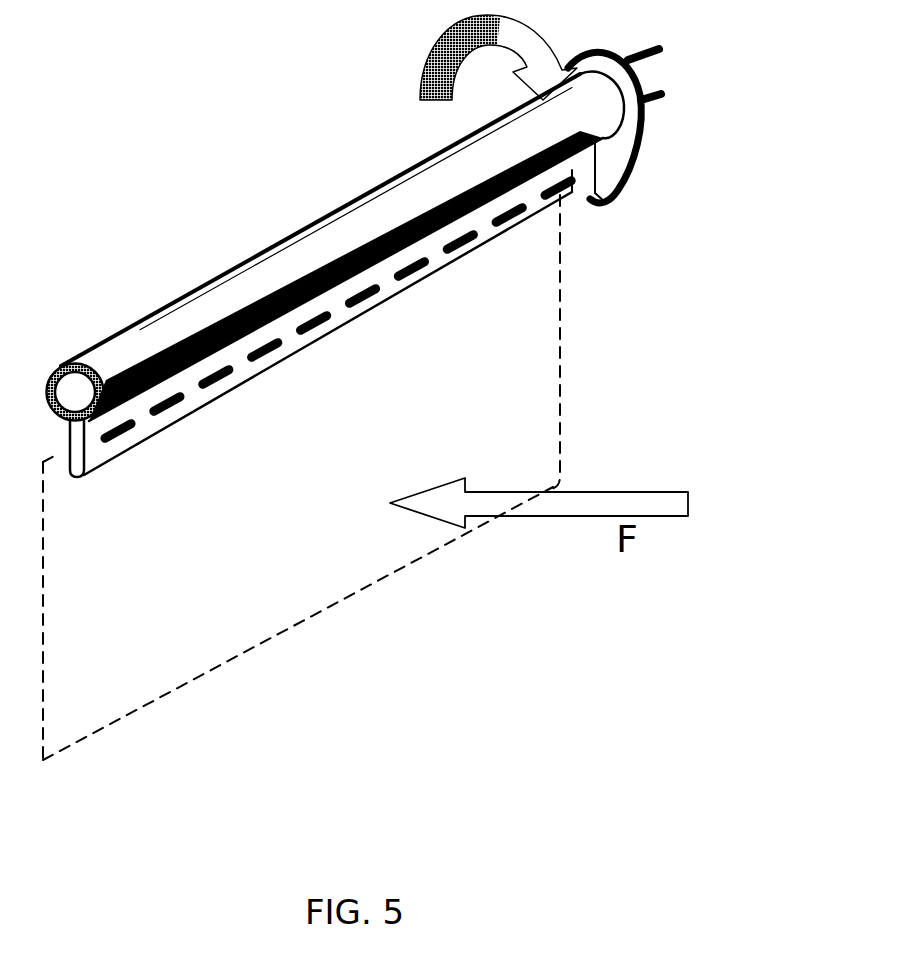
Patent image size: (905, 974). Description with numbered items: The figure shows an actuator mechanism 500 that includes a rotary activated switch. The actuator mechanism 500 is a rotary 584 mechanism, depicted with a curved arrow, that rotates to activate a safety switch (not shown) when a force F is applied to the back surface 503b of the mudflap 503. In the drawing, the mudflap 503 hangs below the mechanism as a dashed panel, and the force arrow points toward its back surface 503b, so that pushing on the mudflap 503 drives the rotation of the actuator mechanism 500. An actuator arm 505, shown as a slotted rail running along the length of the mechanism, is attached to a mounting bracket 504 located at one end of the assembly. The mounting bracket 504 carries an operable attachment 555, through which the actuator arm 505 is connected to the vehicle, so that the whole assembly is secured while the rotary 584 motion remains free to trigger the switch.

The actuator mechanism 500 is at (410, 143).
The rotary 584 is at (445, 45).
The operable attachment 555 is at (660, 58).
The mounting bracket 504 is at (612, 172).
The actuator arm 505 is at (576, 190).
The mudflap 503 is at (298, 607).
The back surface 503b is at (527, 418).